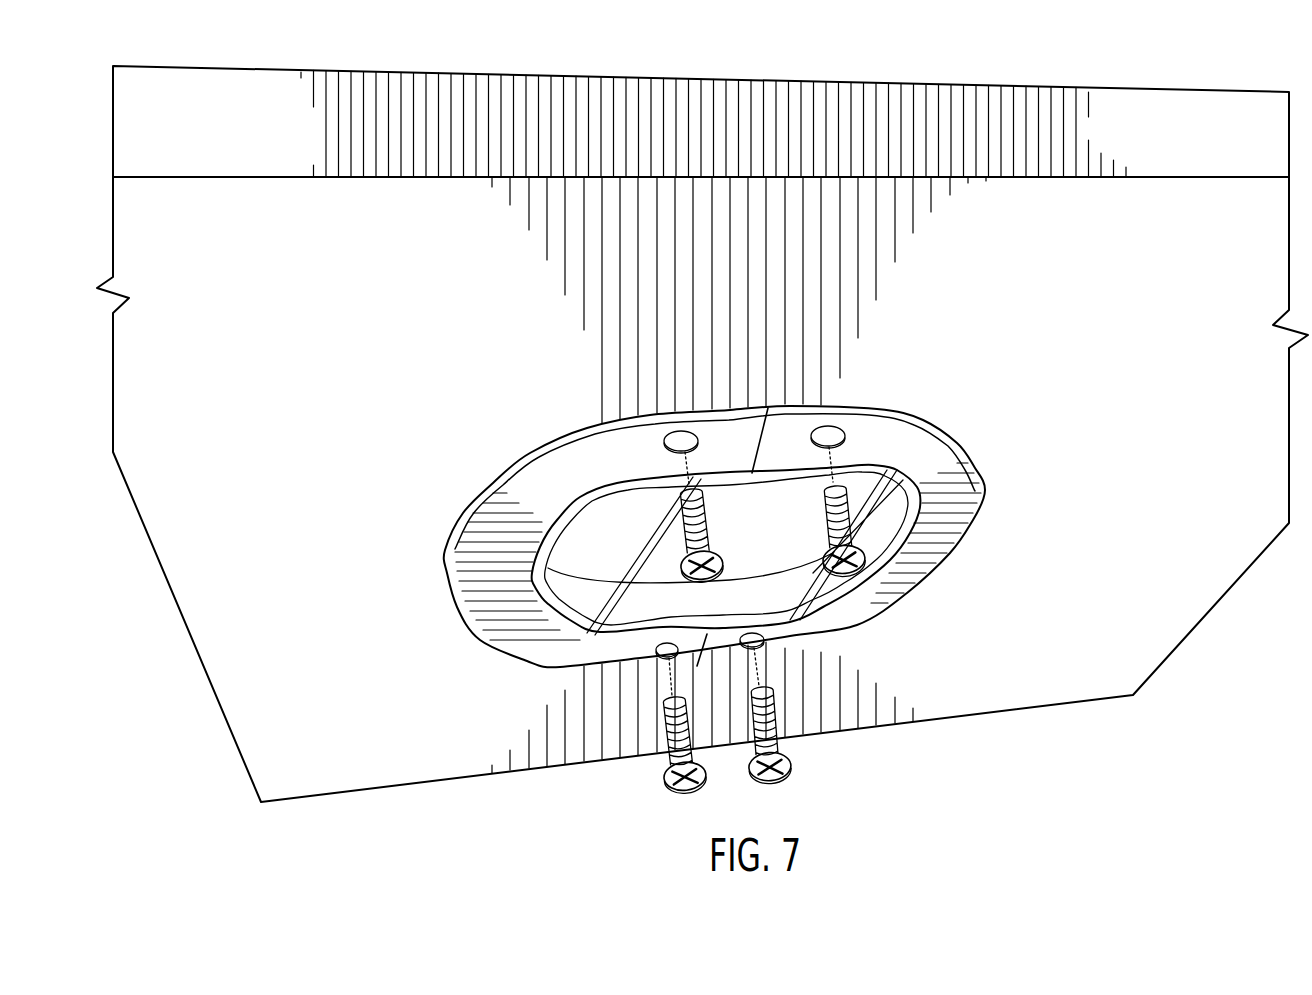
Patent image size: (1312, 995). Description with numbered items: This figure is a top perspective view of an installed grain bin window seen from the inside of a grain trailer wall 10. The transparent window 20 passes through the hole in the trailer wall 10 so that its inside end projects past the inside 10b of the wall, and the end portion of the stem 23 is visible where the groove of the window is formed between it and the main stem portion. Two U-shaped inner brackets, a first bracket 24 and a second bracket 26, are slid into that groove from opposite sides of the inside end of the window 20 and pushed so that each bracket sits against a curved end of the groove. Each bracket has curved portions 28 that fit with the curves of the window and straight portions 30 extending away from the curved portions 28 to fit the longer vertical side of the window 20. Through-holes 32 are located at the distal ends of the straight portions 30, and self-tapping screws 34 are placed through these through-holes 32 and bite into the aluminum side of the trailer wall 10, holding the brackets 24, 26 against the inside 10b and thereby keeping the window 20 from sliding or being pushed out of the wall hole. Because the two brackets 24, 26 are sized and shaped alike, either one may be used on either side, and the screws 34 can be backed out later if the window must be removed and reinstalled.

The trailer wall 10 is at (1140, 126).
The inside of the trailer wall 10b is at (1168, 237).
The transparent window 20 is at (780, 516).
The end portion of the stem 23 is at (852, 600).
The first inner bracket 24 is at (616, 456).
The second inner bracket 26 is at (918, 446).
The curved portions 28 is at (470, 546).
The straight portions 30 is at (780, 435).
The through-holes 32 is at (686, 431).
The self-tapping screws 34 is at (710, 568).